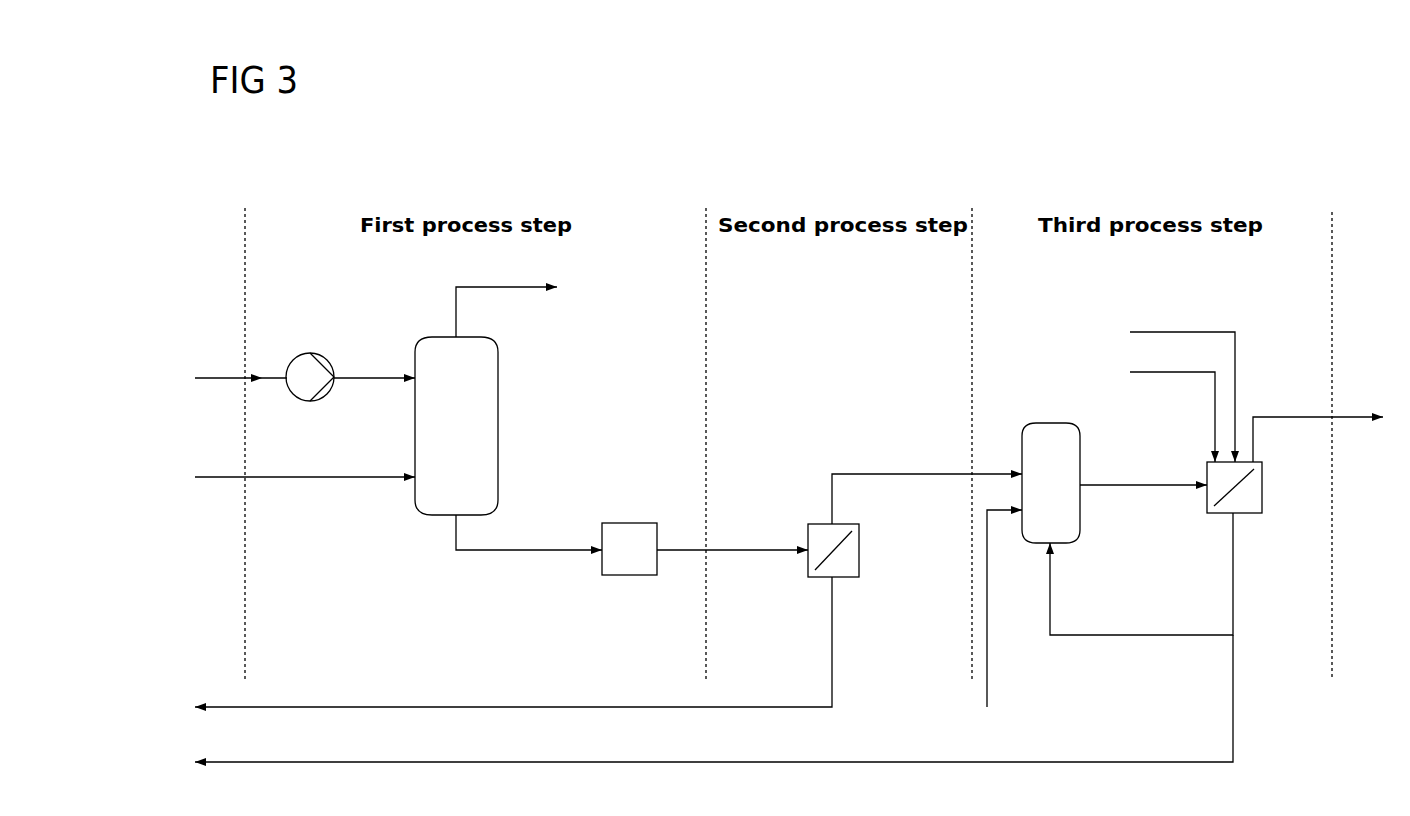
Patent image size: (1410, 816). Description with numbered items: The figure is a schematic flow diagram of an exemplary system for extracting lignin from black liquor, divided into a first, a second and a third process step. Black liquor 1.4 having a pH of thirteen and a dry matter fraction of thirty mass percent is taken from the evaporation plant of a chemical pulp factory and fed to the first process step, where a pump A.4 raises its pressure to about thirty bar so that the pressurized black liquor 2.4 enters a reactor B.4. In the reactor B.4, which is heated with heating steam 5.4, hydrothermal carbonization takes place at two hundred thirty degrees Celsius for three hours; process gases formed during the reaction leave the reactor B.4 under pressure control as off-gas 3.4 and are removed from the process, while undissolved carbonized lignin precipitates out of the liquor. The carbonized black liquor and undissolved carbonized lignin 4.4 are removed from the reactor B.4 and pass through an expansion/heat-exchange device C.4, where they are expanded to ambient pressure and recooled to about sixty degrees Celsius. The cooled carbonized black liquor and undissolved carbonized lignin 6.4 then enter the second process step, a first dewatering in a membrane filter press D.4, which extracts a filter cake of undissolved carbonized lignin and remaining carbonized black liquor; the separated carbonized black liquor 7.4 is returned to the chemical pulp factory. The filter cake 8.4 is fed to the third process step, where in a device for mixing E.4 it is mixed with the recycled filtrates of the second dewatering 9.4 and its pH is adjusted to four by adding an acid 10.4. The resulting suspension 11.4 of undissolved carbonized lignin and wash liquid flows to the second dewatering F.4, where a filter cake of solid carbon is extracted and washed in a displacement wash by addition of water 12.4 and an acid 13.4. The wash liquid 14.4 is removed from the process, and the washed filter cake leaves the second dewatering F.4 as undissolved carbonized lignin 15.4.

The black liquor 1.4 is at (225, 379).
The black liquor 2.4 is at (374, 369).
The off-gas 3.4 is at (524, 308).
The carbonized black liquor and undissolved carbonized lignin 4.4 is at (529, 534).
The heating steam 5.4 is at (289, 478).
The carbonized black liquor and undissolved carbonized lignin 6.4 is at (732, 540).
The carbonized black liquor 7.4 is at (496, 647).
The filter cake 8.4 is at (927, 486).
The filtrates of the second dewatering 9.4 is at (1139, 574).
The acid 10.4 is at (995, 621).
The suspension 11.4 is at (1143, 475).
The water 12.4 is at (1152, 413).
The acid 13.4 is at (1162, 393).
The wash liquid 14.4 is at (692, 703).
The undissolved carbonized lignin 15.4 is at (1320, 427).
The pump A.4 is at (310, 364).
The reactor B.4 is at (456, 426).
The expansion/heat-exchange device C.4 is at (629, 549).
The membrane filter press D.4 is at (833, 550).
The device for mixing E.4 is at (1051, 483).
The second dewatering F.4 is at (1234, 487).